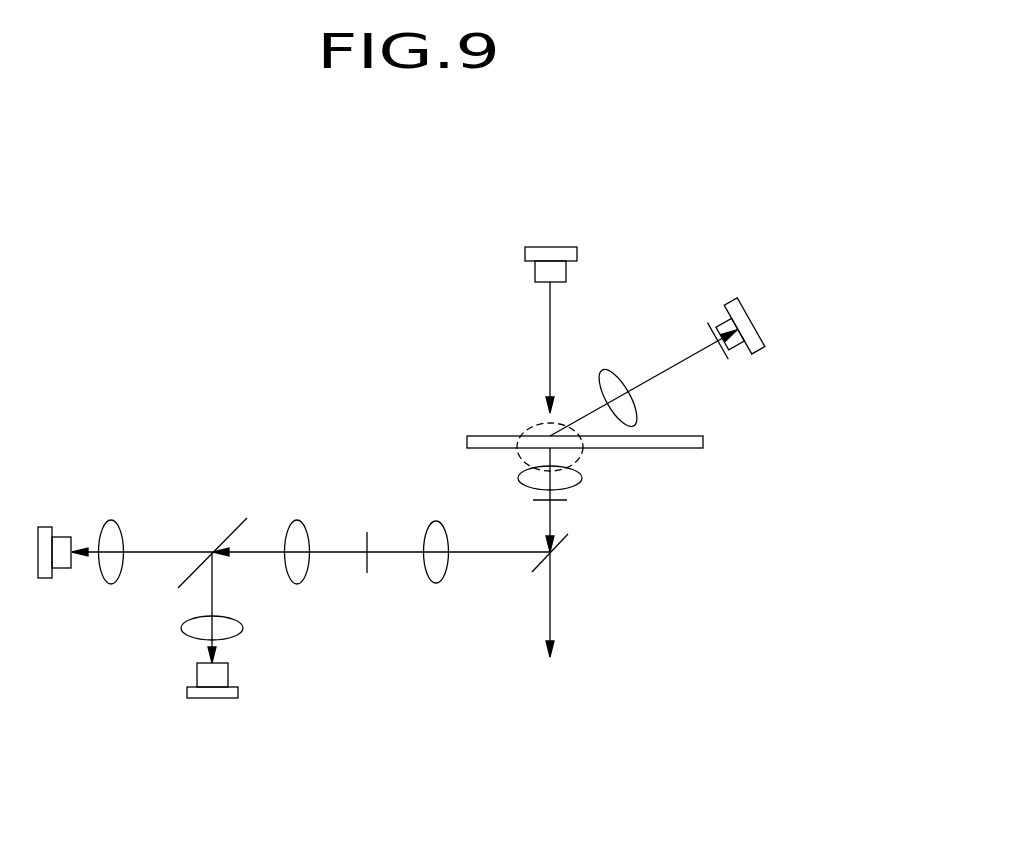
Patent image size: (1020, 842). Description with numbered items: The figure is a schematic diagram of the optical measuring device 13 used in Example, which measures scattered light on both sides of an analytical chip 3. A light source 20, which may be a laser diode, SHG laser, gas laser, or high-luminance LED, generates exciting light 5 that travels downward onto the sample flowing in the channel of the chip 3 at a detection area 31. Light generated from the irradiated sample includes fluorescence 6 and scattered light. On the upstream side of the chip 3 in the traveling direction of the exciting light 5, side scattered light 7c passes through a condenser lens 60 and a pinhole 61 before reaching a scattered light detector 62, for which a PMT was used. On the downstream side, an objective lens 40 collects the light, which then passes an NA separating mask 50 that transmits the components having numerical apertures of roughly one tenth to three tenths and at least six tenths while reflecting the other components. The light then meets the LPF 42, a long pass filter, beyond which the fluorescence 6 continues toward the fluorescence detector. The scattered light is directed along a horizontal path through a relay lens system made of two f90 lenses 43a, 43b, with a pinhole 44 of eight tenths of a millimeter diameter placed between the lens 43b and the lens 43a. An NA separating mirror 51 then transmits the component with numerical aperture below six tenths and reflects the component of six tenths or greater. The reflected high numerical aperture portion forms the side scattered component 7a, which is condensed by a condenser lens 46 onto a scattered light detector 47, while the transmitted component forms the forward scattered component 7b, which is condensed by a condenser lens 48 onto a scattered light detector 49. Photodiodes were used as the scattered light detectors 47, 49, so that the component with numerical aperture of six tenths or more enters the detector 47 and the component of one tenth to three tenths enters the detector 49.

The optical measuring device 13 is at (731, 176).
The light source 20 is at (523, 253).
The exciting light 5 is at (549, 345).
The analytical chip 3 is at (703, 442).
The detection area 31 is at (533, 423).
The condenser lens 60 is at (605, 367).
The side scattered light 7c is at (663, 368).
The pinhole 61 is at (708, 322).
The scattered light detector 62 is at (733, 300).
The objective lens 40 is at (583, 478).
The NA separating mask 50 is at (567, 503).
The LPF 42 is at (569, 536).
The fluorescence 6 is at (552, 597).
The lens 43b is at (436, 583).
The pinhole 44 is at (367, 530).
The lens 43a is at (297, 585).
The NA separating mirror 51 is at (233, 517).
The forward scattered component 7b is at (167, 548).
The side scattered component 7a is at (215, 590).
The condenser lens 46 is at (182, 630).
The scattered light detector 47 is at (185, 692).
The condenser lens 48 is at (111, 520).
The scattered light detector 49 is at (45, 525).